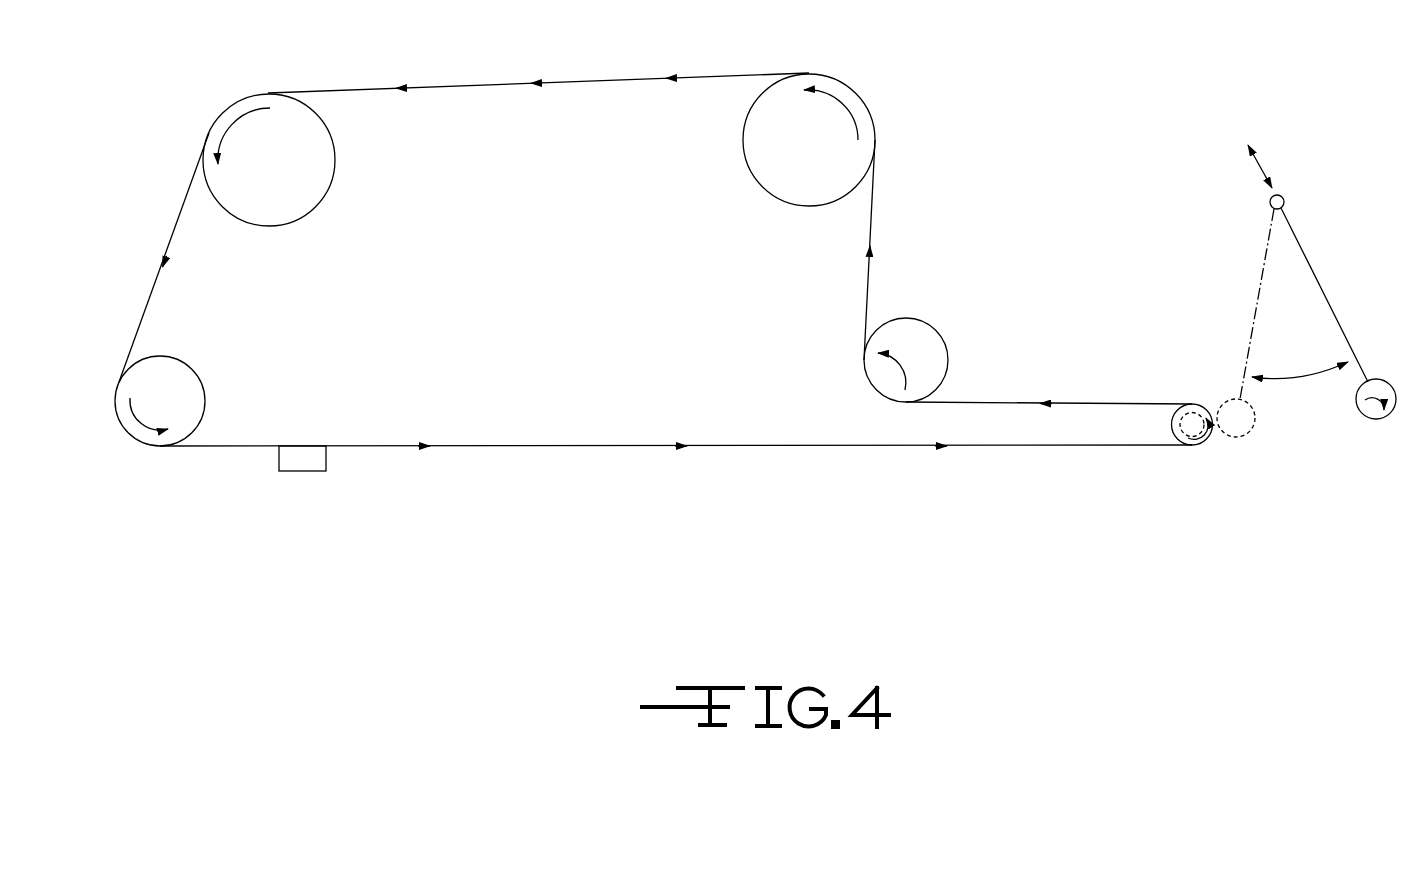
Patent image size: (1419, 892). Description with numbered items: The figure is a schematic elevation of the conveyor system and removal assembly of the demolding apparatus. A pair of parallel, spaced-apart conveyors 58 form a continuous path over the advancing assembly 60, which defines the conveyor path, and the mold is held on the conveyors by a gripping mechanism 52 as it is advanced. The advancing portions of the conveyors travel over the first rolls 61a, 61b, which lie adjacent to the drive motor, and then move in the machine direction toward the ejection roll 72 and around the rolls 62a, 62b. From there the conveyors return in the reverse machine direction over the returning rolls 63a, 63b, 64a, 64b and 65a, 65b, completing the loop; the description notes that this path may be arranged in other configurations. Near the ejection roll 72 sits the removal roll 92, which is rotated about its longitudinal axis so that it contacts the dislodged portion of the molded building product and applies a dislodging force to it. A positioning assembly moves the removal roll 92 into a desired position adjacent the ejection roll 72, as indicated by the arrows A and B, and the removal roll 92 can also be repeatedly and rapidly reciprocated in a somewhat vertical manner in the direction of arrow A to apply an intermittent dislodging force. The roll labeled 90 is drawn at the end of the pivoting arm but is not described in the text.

The gripping mechanism 52 is at (300, 471).
The conveyor 58 is at (572, 443).
The advancing assembly 60 is at (222, 112).
The first roll 61a is at (227, 391).
The first roll 61b is at (190, 367).
The roll 62a is at (1201, 472).
The roll 62b is at (1193, 449).
The returning roll 63a is at (839, 364).
The returning roll 63b is at (880, 396).
The returning roll 64a is at (765, 154).
The returning roll 64b is at (745, 157).
The returning roll 65a is at (345, 160).
The returning roll 65b is at (335, 161).
The ejection roll 72 is at (1193, 411).
The secondary transfer roller 90 is at (1394, 378).
The removal roll 92 is at (1257, 419).
The arrow A is at (1283, 371).
The arrow B is at (1263, 167).